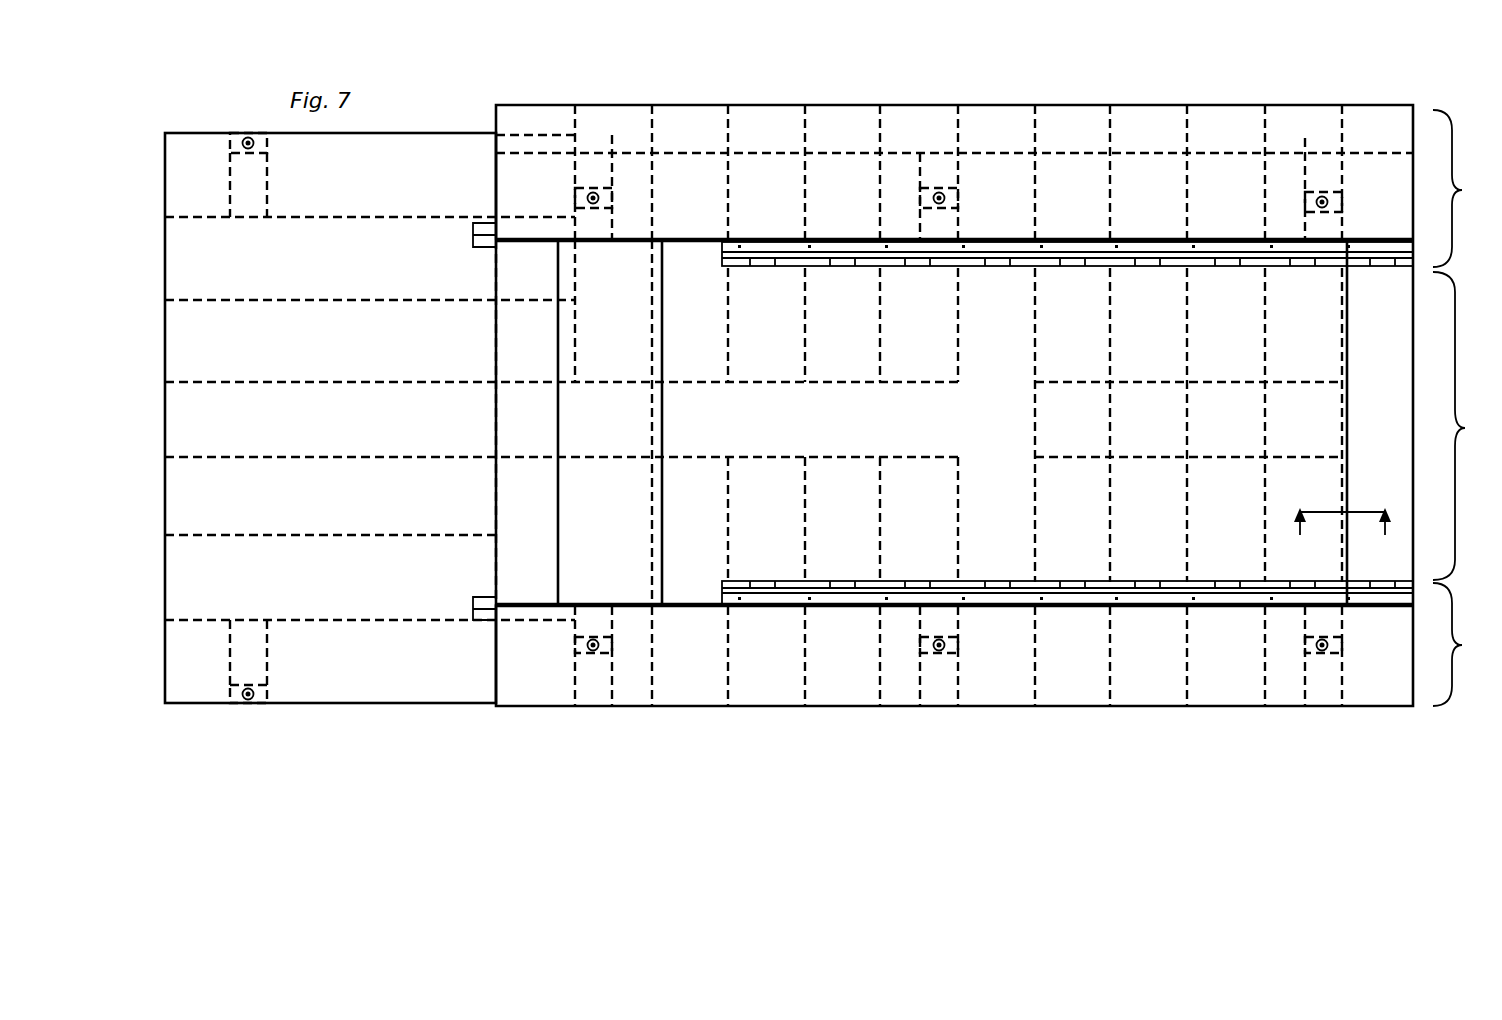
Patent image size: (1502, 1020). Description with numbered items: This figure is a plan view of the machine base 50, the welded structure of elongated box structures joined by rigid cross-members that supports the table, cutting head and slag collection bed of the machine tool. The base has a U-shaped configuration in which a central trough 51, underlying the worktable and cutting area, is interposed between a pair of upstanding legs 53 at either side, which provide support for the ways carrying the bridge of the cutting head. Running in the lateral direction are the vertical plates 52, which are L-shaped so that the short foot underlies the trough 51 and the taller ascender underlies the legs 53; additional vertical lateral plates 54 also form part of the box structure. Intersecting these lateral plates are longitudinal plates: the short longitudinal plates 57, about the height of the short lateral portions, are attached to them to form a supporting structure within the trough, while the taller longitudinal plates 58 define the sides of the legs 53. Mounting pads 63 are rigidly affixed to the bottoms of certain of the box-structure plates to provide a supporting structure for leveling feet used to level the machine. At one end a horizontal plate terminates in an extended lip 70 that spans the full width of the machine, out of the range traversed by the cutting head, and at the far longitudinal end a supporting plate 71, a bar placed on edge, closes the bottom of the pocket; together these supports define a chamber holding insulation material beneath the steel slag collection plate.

The machine base 50 is at (968, 68).
The trough 51 is at (830, 418).
The vertical plates 52 is at (1033, 421).
The upstanding legs 53 is at (829, 405).
The vertical lateral plates 54 is at (1030, 200).
The short longitudinal plates 57 is at (753, 383).
The taller longitudinal plates 58 is at (697, 603).
The mounting pads 63 is at (605, 647).
The extended lip 70 is at (662, 353).
The supporting plate 71 is at (1347, 335).